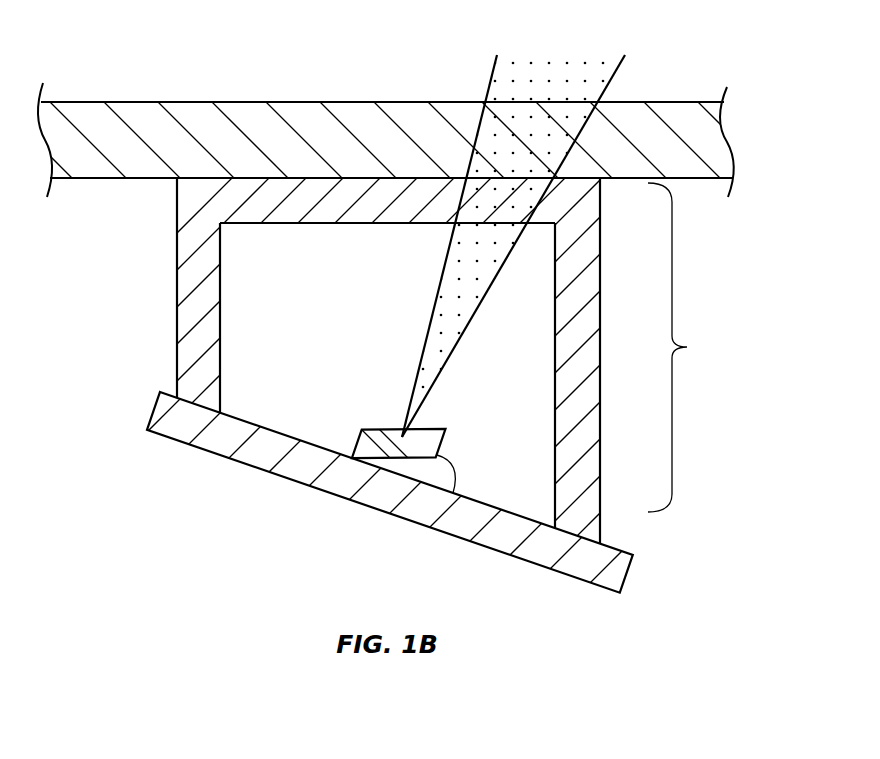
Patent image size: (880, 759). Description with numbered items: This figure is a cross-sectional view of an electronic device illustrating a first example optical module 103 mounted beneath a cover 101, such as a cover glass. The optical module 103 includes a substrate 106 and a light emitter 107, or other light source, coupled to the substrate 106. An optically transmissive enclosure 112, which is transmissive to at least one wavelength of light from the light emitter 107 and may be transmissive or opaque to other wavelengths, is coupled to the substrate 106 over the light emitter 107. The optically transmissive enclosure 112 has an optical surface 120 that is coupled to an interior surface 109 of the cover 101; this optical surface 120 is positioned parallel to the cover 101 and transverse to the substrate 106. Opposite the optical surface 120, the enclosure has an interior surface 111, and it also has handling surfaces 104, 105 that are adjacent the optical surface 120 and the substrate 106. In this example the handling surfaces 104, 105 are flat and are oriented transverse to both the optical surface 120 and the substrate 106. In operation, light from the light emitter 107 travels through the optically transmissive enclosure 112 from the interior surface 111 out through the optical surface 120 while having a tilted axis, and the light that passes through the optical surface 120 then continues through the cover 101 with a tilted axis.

The cover 101 is at (724, 133).
The optical surface 120 is at (318, 177).
The interior surface 109 is at (631, 188).
The optical module 103 is at (686, 347).
The handling surface 104 is at (600, 303).
The handling surface 105 is at (177, 268).
The interior surface 111 is at (338, 225).
The optically transmissive enclosure 112 is at (144, 228).
The substrate 106 is at (292, 483).
The light emitter 107 is at (352, 445).